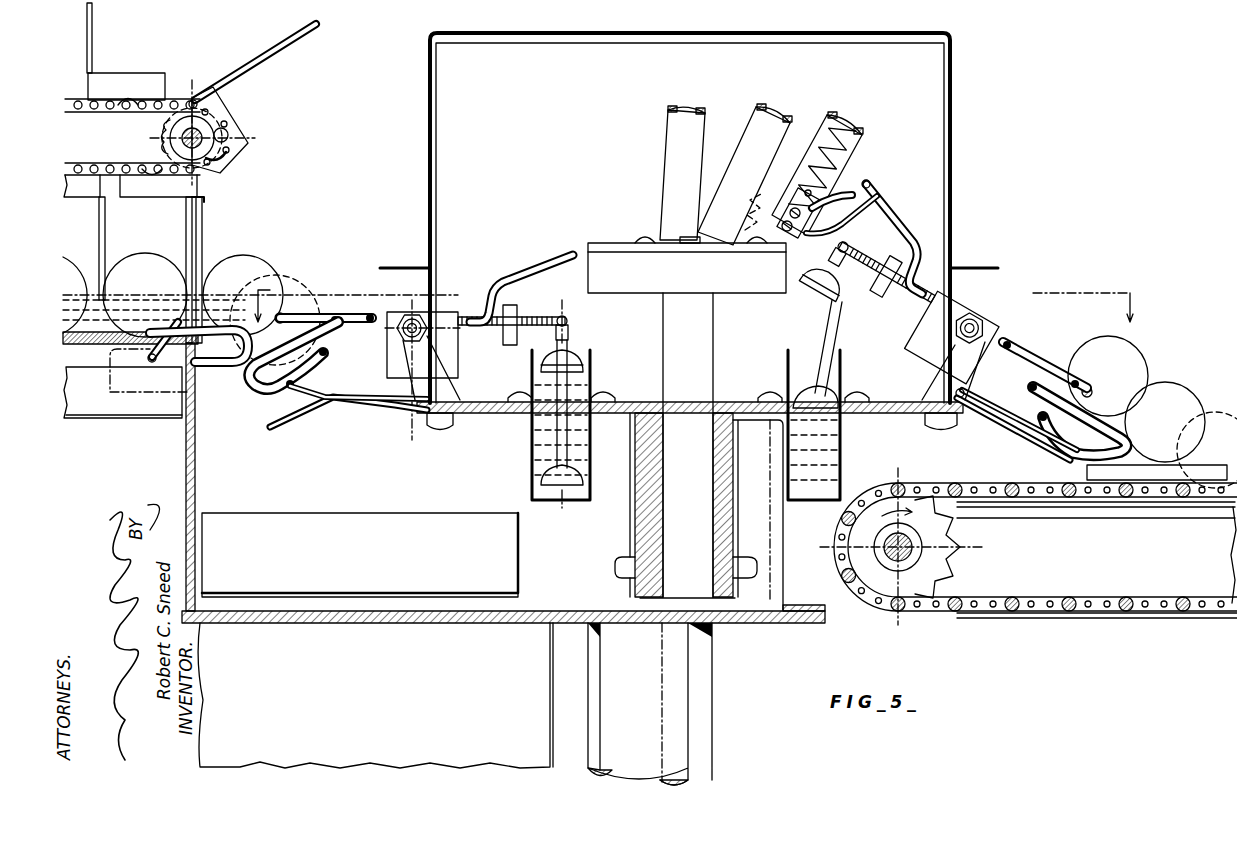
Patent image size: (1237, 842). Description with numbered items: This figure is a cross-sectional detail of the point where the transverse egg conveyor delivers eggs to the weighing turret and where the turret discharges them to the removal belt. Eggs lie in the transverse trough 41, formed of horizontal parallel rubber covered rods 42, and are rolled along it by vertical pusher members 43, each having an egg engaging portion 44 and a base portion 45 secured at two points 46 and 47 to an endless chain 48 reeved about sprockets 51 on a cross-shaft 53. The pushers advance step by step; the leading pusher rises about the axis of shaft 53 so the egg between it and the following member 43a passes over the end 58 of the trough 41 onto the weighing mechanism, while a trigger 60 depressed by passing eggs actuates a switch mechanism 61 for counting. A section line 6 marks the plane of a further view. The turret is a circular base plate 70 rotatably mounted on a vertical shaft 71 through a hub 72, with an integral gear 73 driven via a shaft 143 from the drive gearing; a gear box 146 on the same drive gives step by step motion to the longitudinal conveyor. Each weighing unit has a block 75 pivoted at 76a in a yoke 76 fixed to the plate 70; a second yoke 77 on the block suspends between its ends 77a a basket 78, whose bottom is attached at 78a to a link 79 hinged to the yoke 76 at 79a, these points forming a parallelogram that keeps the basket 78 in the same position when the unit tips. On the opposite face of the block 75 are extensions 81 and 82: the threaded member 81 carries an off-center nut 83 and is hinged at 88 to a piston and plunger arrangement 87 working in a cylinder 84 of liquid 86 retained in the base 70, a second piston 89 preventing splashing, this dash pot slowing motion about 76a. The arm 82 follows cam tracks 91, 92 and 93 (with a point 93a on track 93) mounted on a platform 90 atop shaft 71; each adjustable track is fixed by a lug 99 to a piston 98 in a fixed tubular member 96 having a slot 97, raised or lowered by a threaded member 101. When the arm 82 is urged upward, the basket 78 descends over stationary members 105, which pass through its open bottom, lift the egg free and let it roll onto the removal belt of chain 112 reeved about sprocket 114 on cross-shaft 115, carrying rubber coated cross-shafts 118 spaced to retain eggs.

The section line 6 is at (695, 296).
The transverse trough 41 is at (103, 357).
The rubber covered rods 42 is at (140, 358).
The vertical pusher members 43 is at (93, 55).
The following member 43a is at (104, 250).
The egg engaging portion 44 is at (268, 55).
The base portion 45 is at (142, 73).
The securing point 46 is at (228, 152).
The securing point 47 is at (194, 98).
The endless chain 48 is at (132, 137).
The sprockets 51 is at (168, 132).
The cross-shaft 53 is at (182, 142).
The end of trough 58 is at (238, 362).
The trigger 60 is at (172, 305).
The switch mechanism 61 is at (165, 416).
The circular base plate member 70 is at (760, 416).
The vertical shaft 71 is at (663, 310).
The hub 72 is at (733, 475).
The integral gear 73 is at (752, 566).
The block 75 is at (388, 370).
The yoke 76 is at (452, 384).
The pivot point 76a is at (407, 332).
The second yoke 77 is at (345, 313).
The yoke ends 77a is at (283, 313).
The egg retaining basket 78 is at (258, 387).
The attachment point 78a is at (290, 388).
The link 79 is at (385, 402).
The hinge point 79a is at (966, 392).
The threaded extension 81 is at (512, 312).
The rigidly extending arm 82 is at (533, 268).
The nut 83 is at (508, 343).
The cylinder 84 is at (531, 452).
The liquid 86 is at (578, 438).
The piston and plunger arrangement 87 is at (556, 428).
The hinge connection 88 is at (562, 315).
The second piston 89 is at (570, 357).
The platform 90 is at (600, 243).
The cam track 91 is at (810, 203).
The cam track 92 is at (835, 202).
The cam track 93 is at (850, 221).
The rod end 93a is at (870, 186).
The tubular member 96 is at (702, 125).
The slot 97 is at (830, 180).
The piston 98 is at (760, 186).
The lug 99 is at (792, 232).
The threaded member 101 is at (815, 125).
The stationary members 105 is at (335, 406).
The chain 112 is at (870, 596).
The sprocket 114 is at (958, 568).
The cross-shaft 115 is at (922, 547).
The rubber coated cross-shafts 118 is at (1126, 498).
The shaft 143 is at (712, 705).
The gear box 146 is at (442, 756).